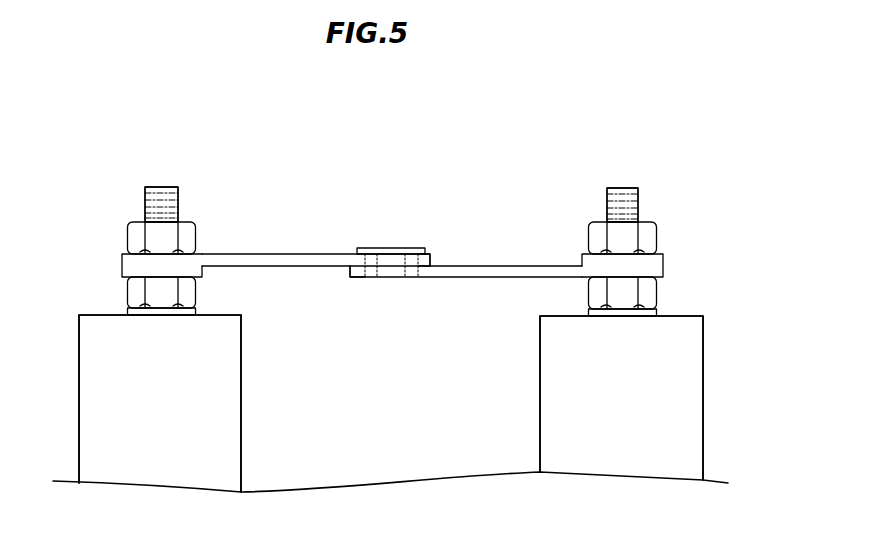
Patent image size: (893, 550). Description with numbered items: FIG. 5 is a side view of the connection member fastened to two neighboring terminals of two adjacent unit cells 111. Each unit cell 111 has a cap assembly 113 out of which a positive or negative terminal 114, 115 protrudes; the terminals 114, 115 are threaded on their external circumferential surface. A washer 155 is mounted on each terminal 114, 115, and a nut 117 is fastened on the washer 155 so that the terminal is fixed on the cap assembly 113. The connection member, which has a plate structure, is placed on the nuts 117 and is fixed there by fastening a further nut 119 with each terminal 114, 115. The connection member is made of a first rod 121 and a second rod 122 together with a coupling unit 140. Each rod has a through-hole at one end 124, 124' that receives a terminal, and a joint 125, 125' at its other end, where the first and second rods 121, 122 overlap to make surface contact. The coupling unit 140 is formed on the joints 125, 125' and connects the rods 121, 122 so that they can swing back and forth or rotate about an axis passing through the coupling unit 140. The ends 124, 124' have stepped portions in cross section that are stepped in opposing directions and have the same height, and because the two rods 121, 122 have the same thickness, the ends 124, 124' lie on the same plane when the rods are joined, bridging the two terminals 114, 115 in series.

The unit cell 111 is at (247, 402).
The cap assembly 113 is at (98, 392).
The positive terminal 114 is at (163, 190).
The negative terminal 115 is at (391, 204).
The nut 117 is at (137, 293).
The nut 119 is at (188, 236).
The first rod 121 is at (505, 270).
The second rod 122 is at (301, 262).
The end of first rod 124 is at (651, 267).
The end of second rod 124' is at (130, 264).
The joint of first rod 125 is at (363, 296).
The joint of second rod 125' is at (444, 241).
The coupling unit 140 is at (388, 246).
The washer 155 is at (150, 316).